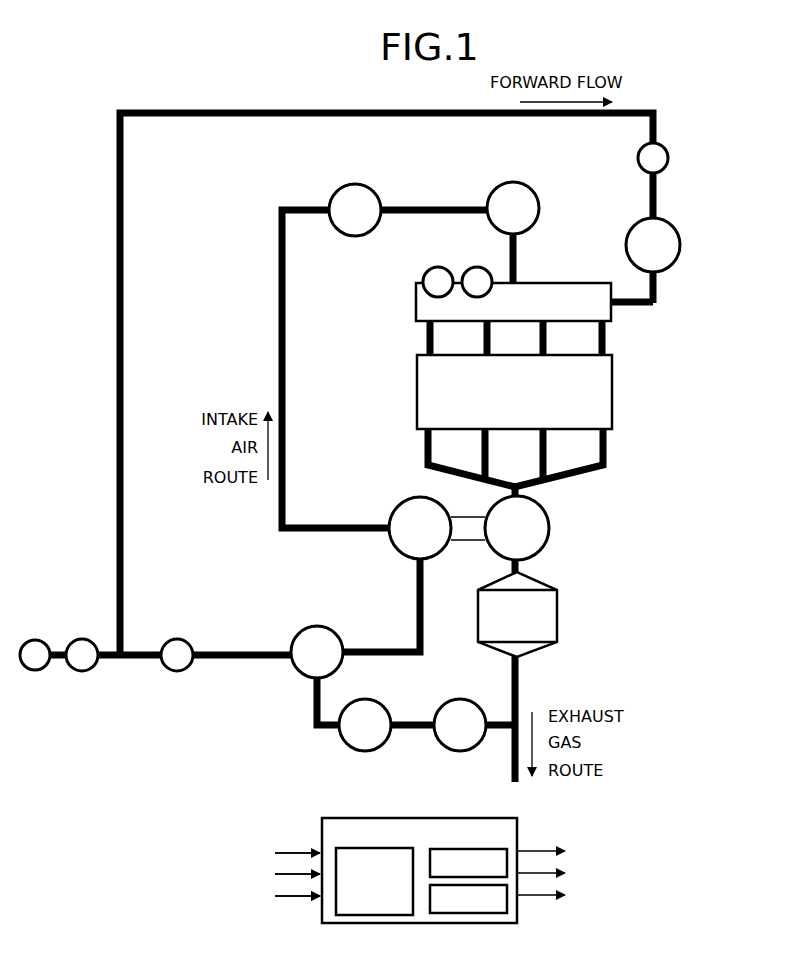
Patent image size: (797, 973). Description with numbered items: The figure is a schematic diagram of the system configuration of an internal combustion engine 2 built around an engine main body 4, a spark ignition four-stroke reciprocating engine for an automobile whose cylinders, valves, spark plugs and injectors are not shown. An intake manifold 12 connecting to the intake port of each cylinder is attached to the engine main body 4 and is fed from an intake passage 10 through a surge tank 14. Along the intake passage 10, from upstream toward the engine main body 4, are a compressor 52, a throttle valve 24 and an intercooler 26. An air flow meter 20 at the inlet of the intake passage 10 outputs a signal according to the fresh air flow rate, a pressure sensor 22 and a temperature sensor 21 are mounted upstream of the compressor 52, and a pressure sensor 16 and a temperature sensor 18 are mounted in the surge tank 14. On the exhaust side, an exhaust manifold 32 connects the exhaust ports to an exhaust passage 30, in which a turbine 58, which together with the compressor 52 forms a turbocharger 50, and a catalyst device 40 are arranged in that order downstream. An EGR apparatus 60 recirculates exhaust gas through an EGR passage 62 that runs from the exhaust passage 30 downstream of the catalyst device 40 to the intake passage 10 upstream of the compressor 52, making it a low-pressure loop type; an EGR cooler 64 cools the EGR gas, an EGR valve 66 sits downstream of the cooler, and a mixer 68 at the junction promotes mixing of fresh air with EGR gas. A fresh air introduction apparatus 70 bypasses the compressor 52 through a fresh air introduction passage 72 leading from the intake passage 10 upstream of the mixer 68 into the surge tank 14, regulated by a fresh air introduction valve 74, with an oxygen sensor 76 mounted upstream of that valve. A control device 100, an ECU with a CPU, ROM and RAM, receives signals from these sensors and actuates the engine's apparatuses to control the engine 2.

The internal combustion engine 2 is at (705, 332).
The engine main body 4 is at (614, 393).
The intake passage 10 is at (280, 375).
The intake manifold 12 is at (430, 343).
The surge tank 14 is at (416, 300).
The pressure sensor 16 is at (430, 268).
The temperature sensor 18 is at (472, 270).
The air flow meter 20 is at (35, 638).
The temperature sensor 21 is at (81, 637).
The pressure sensor 22 is at (177, 637).
The throttle valve 24 is at (350, 186).
The intercooler 26 is at (540, 212).
The exhaust passage 30 is at (521, 695).
The exhaust manifold 32 is at (607, 458).
The catalyst device 40 is at (558, 618).
The turbocharger 50 is at (413, 487).
The compressor 52 is at (392, 513).
The turbine 58 is at (551, 528).
The EGR apparatus 60 is at (297, 714).
The EGR passage 62 is at (410, 719).
The EGR cooler 64 is at (460, 698).
The EGR valve 66 is at (348, 752).
The mixer 68 is at (316, 625).
The fresh air introduction apparatus 70 is at (688, 201).
The fresh air introduction passage 72 is at (124, 243).
The fresh air introduction valve 74 is at (680, 246).
The oxygen sensor 76 is at (668, 158).
The control device 100 is at (401, 818).